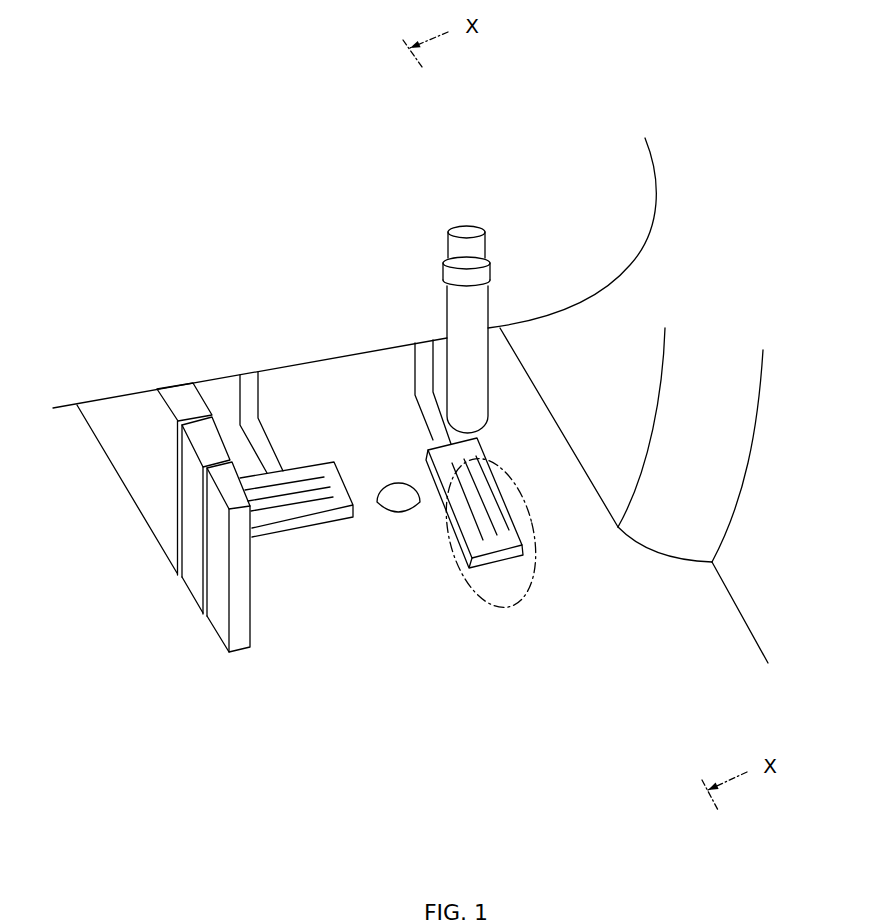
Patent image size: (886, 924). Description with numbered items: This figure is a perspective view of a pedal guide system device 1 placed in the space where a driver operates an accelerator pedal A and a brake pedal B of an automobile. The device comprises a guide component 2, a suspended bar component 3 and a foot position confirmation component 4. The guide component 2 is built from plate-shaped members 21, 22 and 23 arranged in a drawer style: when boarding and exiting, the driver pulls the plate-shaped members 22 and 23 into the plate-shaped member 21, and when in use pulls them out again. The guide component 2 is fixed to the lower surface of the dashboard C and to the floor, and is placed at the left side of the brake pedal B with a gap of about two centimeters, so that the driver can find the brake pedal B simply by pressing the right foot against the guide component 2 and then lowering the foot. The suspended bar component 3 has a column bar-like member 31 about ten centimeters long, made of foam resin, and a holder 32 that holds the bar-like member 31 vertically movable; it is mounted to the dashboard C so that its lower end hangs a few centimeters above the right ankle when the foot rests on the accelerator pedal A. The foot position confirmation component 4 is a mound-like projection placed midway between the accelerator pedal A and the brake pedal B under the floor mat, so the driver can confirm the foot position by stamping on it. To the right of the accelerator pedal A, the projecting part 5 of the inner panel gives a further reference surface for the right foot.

The pedal guide system device 1 is at (257, 248).
The guide component 2 is at (139, 553).
The plate-shaped member 21 is at (143, 525).
The plate-shaped member 22 is at (188, 598).
The plate-shaped member 23 is at (218, 638).
The suspended bar component 3 is at (537, 277).
The bar-like member 31 is at (477, 315).
The holder 32 is at (488, 268).
The foot position confirmation component 4 is at (405, 518).
The projecting part of the inner panel 5 is at (705, 415).
The accelerator pedal A is at (498, 567).
The brake pedal B is at (297, 538).
The dashboard C is at (643, 182).